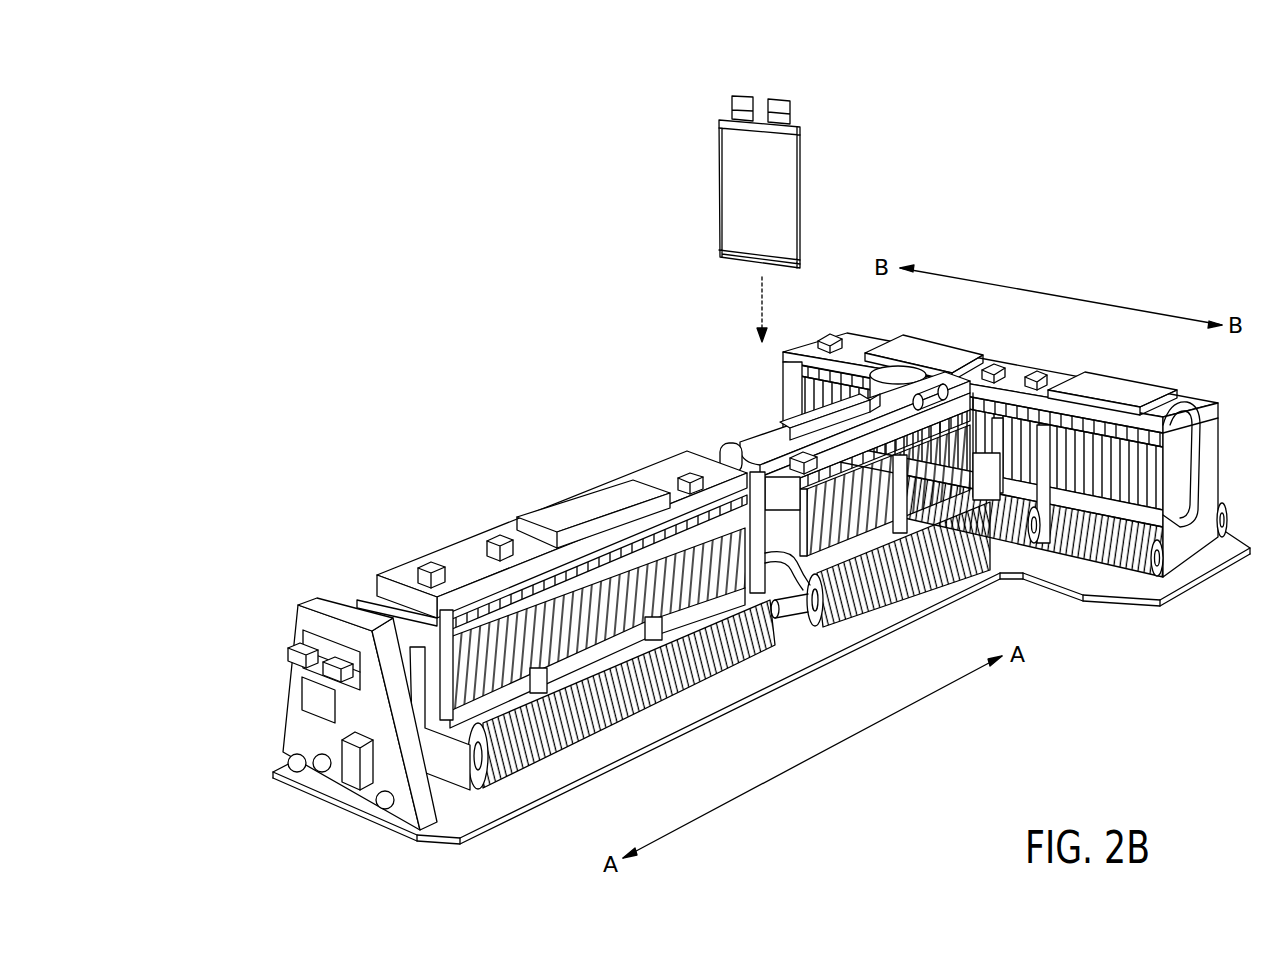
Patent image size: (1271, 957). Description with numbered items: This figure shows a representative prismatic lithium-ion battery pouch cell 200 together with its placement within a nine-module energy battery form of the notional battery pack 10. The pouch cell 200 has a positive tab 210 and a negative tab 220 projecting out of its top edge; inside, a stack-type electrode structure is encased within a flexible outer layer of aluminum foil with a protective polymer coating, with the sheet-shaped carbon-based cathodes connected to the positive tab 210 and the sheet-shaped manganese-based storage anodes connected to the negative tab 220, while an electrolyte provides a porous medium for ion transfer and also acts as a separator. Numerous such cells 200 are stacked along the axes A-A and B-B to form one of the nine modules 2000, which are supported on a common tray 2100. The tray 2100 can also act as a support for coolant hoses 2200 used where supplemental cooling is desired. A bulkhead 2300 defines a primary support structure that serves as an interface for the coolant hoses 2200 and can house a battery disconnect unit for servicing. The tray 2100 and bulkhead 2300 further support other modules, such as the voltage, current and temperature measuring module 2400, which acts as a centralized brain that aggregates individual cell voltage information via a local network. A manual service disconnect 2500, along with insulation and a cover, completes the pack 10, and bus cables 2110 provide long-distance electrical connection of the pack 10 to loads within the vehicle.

The battery pack 10 is at (730, 580).
The prismatic lithium-ion battery pouch cell 200 is at (704, 192).
The positive tab 210 is at (788, 100).
The negative tab 220 is at (745, 96).
The module 2000 is at (566, 600).
The tray 2100 is at (483, 818).
The bus cables 2110 is at (740, 475).
The coolant hoses 2200 is at (797, 637).
The bulkhead 2300 is at (302, 738).
The voltage, current and temperature measuring module (VITM) 2400 is at (437, 630).
The manual service disconnect 2500 is at (907, 374).